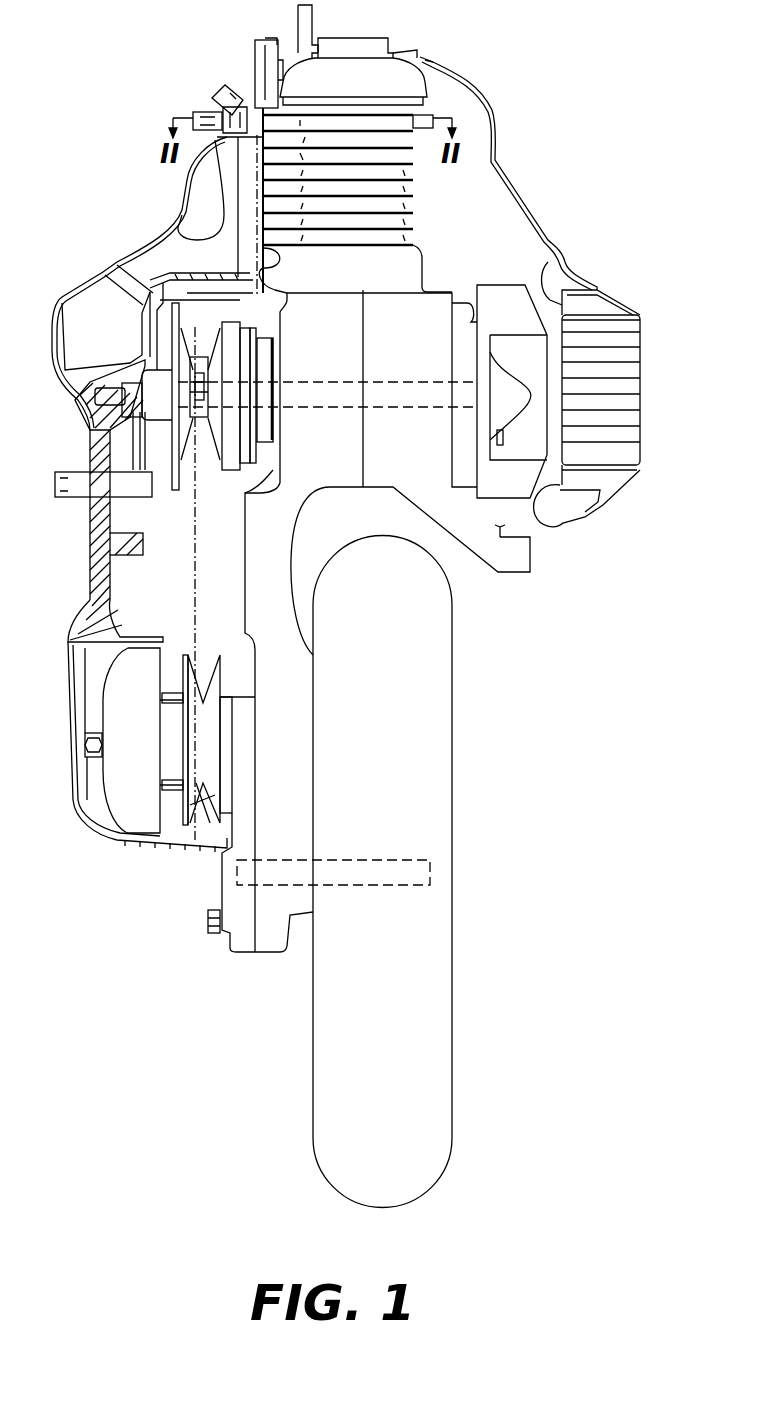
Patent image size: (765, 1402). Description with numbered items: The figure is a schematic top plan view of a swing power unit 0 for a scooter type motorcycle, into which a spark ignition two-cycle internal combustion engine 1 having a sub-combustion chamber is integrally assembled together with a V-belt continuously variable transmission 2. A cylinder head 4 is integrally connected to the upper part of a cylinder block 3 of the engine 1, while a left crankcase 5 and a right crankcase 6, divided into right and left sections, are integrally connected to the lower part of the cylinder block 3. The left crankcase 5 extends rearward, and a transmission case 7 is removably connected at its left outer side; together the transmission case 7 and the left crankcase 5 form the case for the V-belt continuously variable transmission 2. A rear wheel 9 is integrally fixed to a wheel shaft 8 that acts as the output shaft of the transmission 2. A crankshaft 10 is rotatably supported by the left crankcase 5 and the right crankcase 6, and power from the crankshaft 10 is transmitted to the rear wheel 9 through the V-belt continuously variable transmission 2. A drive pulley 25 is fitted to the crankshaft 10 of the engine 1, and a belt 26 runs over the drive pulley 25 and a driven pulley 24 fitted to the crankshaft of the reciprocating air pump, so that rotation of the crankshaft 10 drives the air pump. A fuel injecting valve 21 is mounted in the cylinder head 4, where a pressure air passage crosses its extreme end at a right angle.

The swing power unit 0 is at (518, 631).
The spark ignition 2-cycle internal combustion engine 1 is at (484, 249).
The V-belt continuously variable transmission 2 is at (152, 866).
The cylinder block 3 is at (392, 223).
The cylinder head 4 is at (385, 155).
The left crankcase 5 is at (282, 513).
The right crankcase 6 is at (390, 470).
The transmission case 7 is at (92, 542).
The wheel shaft 8 is at (430, 870).
The rear wheel 9 is at (430, 740).
The crankshaft 10 is at (305, 393).
The fuel injecting valve 21 is at (218, 92).
The driven pulley 24 is at (253, 150).
The drive pulley 25 is at (265, 350).
The belt 26 is at (290, 277).